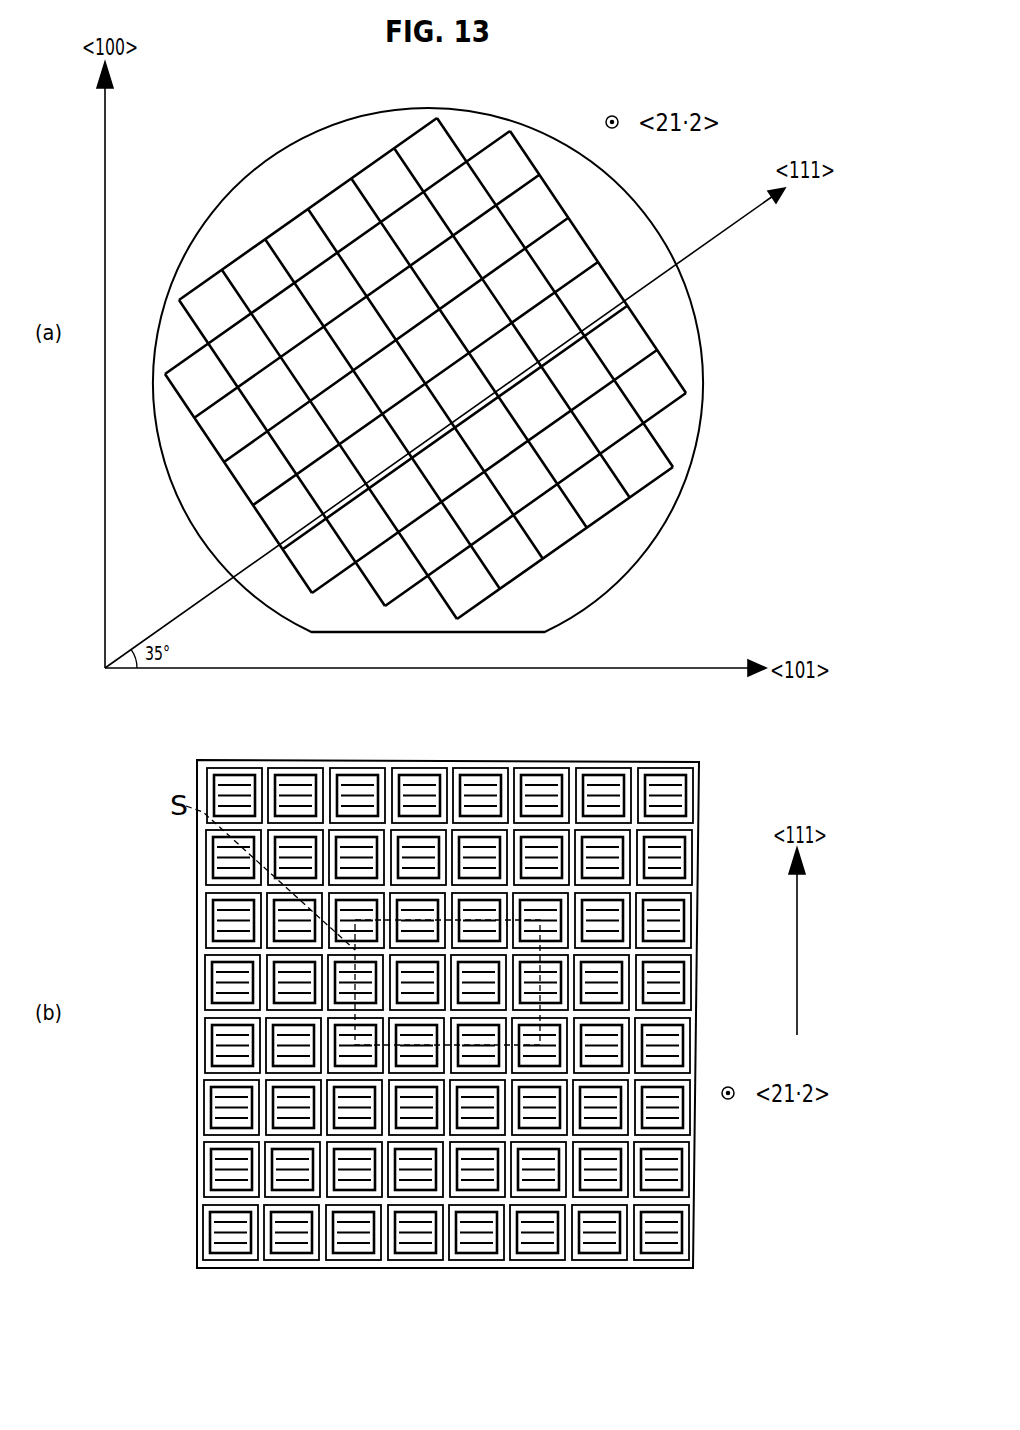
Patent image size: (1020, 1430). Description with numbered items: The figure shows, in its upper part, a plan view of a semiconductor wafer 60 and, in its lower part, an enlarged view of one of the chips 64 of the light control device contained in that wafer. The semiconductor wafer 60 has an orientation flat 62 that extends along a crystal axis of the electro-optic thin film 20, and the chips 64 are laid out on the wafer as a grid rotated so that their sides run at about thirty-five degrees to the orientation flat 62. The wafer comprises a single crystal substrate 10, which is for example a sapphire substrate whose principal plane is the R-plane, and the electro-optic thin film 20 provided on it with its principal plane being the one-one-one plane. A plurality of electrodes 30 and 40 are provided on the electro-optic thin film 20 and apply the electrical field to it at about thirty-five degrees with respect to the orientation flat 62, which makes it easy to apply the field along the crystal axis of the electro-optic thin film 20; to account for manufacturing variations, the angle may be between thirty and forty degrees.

The single crystal substrate 10 is at (480, 996).
The electro-optic thin film 20 is at (483, 1014).
The electrode 30 is at (680, 884).
The electrode 40 is at (700, 877).
The semiconductor wafer 60 is at (573, 588).
The orientation flat 62 is at (450, 633).
The chip 64 is at (627, 422).